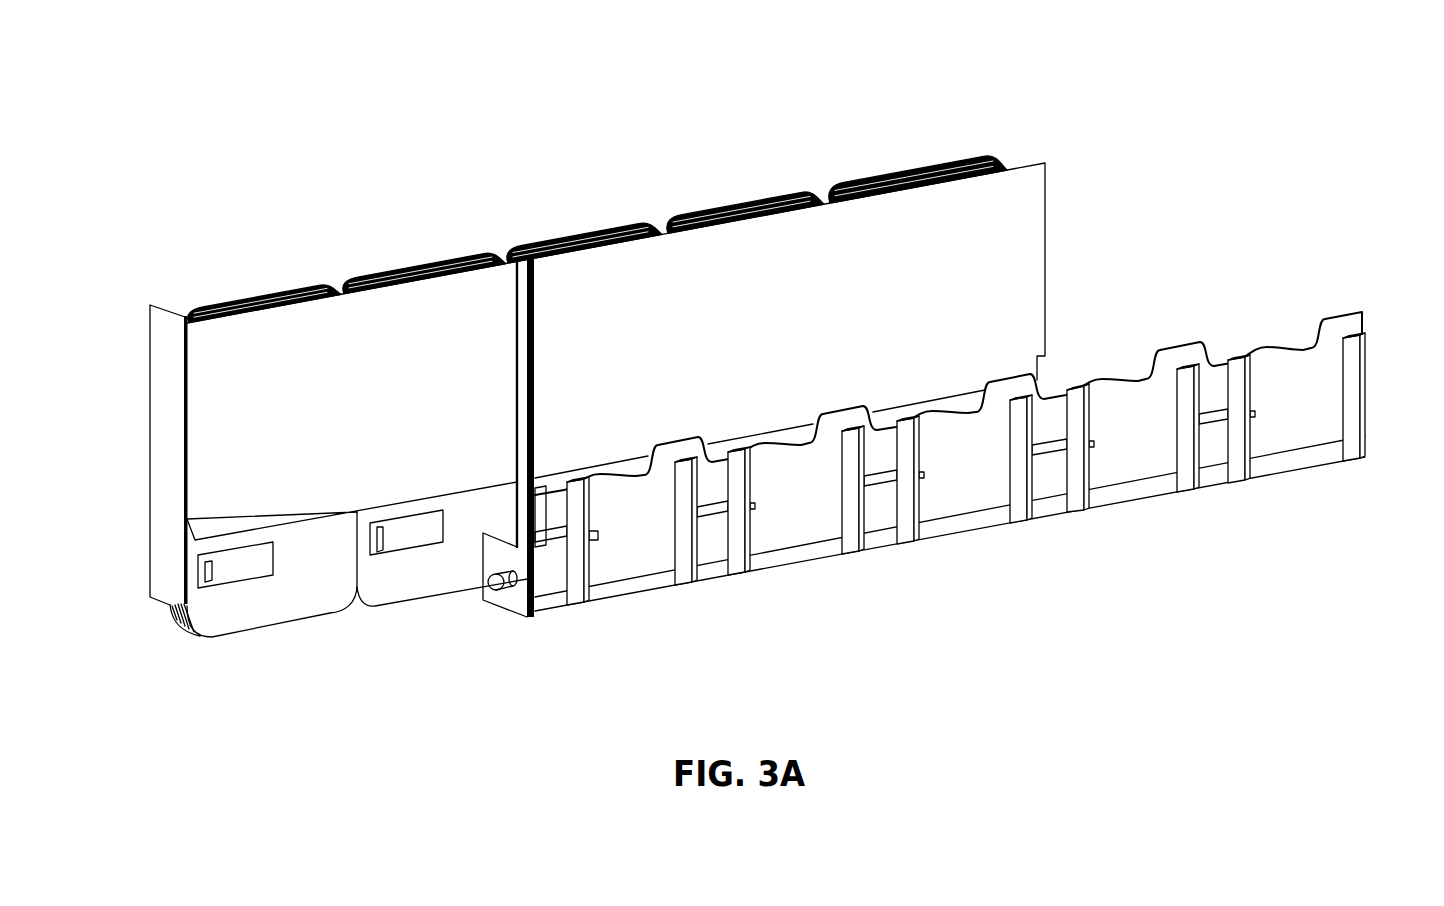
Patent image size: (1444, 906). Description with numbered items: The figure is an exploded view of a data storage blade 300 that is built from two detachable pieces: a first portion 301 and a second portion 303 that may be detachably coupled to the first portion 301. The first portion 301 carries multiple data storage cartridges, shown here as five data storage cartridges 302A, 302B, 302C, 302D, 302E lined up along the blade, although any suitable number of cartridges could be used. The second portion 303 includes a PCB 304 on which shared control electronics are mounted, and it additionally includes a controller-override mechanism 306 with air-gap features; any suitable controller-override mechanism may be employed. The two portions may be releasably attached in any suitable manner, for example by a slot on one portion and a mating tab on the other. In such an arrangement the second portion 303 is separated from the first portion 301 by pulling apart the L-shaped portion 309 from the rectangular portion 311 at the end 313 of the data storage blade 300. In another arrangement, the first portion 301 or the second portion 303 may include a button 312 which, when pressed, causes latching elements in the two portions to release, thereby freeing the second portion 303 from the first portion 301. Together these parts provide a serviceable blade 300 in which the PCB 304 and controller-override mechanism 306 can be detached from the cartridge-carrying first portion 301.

The data storage blade 300 is at (750, 383).
The first portion 301 is at (554, 414).
The data storage cartridge 302A is at (301, 288).
The data storage cartridge 302B is at (457, 252).
The data storage cartridge 302C is at (632, 222).
The data storage cartridge 302D is at (791, 193).
The data storage cartridge 302E is at (957, 164).
The second portion 303 is at (986, 454).
The PCB 304 is at (1117, 477).
The controller-override mechanism 306 is at (487, 527).
The L-shaped portion 309 is at (523, 495).
The rectangular portion 311 is at (167, 325).
The button 312 is at (513, 590).
The end 313 is at (161, 645).